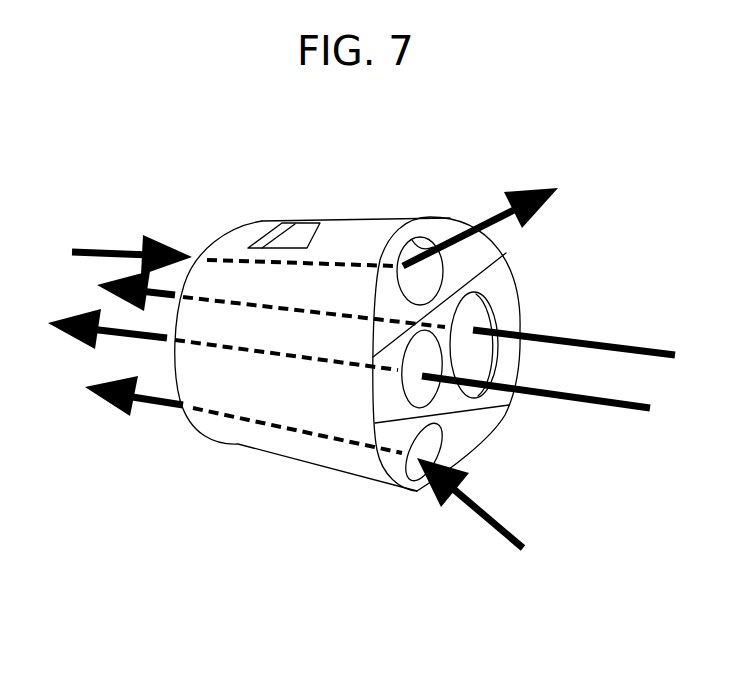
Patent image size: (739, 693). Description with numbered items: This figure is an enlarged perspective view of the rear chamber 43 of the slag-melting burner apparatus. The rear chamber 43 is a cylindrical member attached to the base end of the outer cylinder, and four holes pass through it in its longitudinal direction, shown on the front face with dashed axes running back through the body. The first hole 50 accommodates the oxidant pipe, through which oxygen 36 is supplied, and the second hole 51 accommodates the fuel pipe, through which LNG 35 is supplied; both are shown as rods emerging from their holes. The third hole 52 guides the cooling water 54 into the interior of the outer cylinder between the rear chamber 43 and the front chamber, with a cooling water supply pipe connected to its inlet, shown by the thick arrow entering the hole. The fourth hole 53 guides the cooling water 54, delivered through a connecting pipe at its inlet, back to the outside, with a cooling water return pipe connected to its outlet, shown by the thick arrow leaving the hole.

The rear chamber 43 is at (368, 228).
The fourth hole 53 is at (416, 247).
The second hole 51 is at (427, 392).
The third hole 52 is at (412, 474).
The first hole 50 is at (486, 313).
The oxygen 36 is at (649, 349).
The LNG 35 is at (632, 411).
The cooling water 54 is at (491, 221).